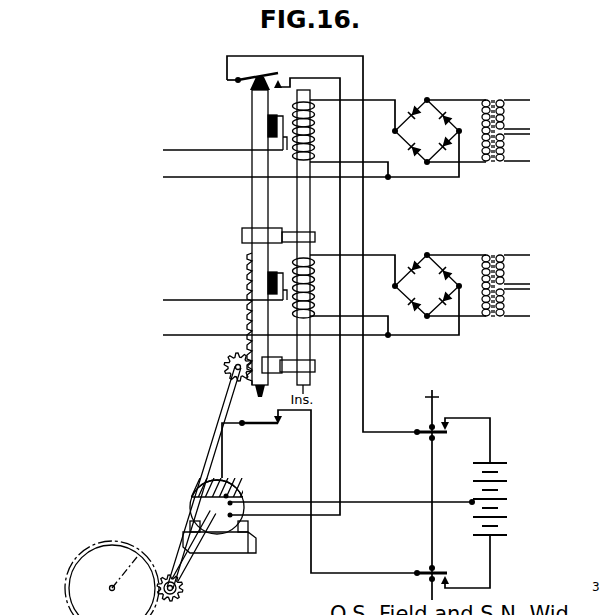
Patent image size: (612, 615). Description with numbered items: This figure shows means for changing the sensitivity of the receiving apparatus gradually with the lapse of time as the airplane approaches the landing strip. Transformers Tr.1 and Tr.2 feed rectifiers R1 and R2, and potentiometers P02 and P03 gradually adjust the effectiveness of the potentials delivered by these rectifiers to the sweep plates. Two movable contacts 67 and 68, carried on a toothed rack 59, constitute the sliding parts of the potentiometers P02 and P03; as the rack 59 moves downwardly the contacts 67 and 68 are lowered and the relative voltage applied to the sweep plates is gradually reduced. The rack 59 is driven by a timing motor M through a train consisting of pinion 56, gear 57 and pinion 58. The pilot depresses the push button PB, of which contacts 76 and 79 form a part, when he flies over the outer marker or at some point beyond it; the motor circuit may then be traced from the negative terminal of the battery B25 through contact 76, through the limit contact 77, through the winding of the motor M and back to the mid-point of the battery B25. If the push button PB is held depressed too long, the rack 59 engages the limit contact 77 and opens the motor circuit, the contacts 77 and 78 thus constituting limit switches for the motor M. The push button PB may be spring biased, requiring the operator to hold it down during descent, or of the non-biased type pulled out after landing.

The limit contact 78 is at (257, 74).
The rack 59 is at (248, 283).
The movable contact 67 is at (283, 117).
The movable contact 68 is at (284, 272).
The potentiometer P02 is at (312, 138).
The potentiometer P03 is at (313, 295).
The rectifier R1 is at (427, 131).
The rectifier R2 is at (427, 285).
The transformer Tr.1 is at (491, 100).
The transformer Tr.2 is at (491, 255).
The push button PB is at (432, 383).
The contact 79 is at (428, 436).
The contact 76 is at (430, 570).
The limit contact 77 is at (250, 427).
The battery B25 is at (499, 498).
The timing motor M is at (226, 483).
The pinion 58 is at (229, 360).
The pinion 56 is at (184, 592).
The gear 57 is at (123, 549).